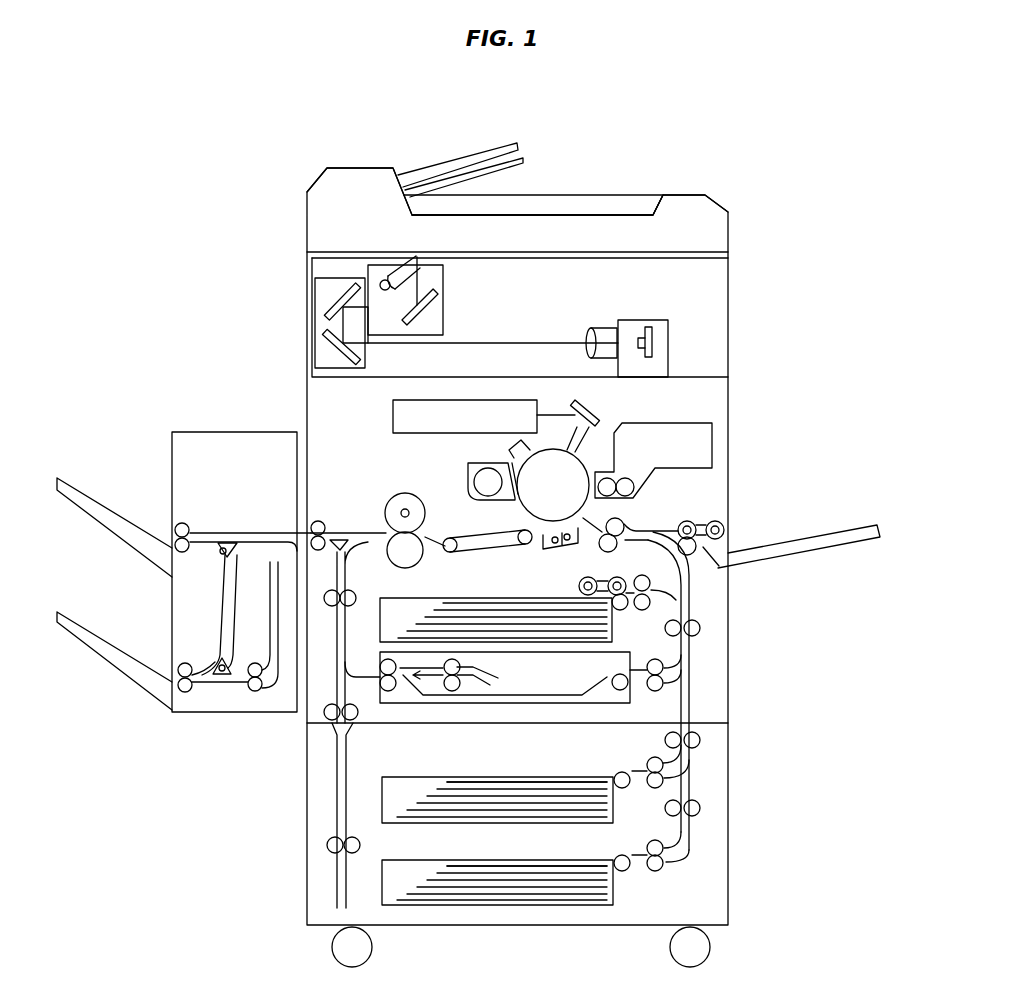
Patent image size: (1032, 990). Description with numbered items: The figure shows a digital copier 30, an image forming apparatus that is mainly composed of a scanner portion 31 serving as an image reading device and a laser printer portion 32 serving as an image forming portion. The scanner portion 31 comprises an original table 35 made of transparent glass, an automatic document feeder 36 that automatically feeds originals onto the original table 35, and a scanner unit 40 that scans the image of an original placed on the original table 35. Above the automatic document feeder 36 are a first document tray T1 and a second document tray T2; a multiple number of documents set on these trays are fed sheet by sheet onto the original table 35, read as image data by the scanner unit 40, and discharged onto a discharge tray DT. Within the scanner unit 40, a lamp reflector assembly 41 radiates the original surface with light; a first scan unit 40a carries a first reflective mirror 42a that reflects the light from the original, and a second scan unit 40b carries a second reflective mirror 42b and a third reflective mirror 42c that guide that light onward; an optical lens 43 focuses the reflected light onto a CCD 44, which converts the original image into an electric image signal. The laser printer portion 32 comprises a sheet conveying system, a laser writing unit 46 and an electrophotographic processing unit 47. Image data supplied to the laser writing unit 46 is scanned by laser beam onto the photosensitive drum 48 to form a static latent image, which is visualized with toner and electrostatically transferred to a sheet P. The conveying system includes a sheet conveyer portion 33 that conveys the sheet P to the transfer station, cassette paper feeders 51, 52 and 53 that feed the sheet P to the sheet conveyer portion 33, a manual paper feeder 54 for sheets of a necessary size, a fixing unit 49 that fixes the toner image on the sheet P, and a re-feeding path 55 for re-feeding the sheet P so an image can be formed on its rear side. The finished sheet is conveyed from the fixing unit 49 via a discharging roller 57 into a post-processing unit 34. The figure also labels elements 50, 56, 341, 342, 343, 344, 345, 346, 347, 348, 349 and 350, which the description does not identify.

The digital copier 30 is at (804, 302).
The scanner portion 31 is at (728, 289).
The laser printer portion 32 is at (728, 449).
The sheet conveyer portion 33 is at (651, 524).
The post-processing unit 34 is at (184, 569).
The original table 35 is at (548, 252).
The automatic document feeder (ADF) 36 is at (603, 222).
The discharge tray DT is at (650, 195).
The first document tray T1 is at (463, 153).
The second document tray T2 is at (521, 152).
The scanner unit 40 is at (418, 314).
The first scan unit 40a is at (450, 325).
The second scan unit 40b is at (367, 361).
The lamp reflector assembly 41 is at (412, 282).
The first reflective mirror 42a is at (437, 300).
The second reflective mirror 42b is at (330, 308).
The third reflective mirror 42c is at (325, 340).
The optical lens 43 is at (590, 335).
The CCD 44 is at (640, 328).
The laser writing unit 46 is at (420, 433).
The electrophotographic processing unit 47 is at (705, 403).
The photosensitive drum 48 is at (593, 447).
The fixing unit 49 is at (426, 513).
The paper feed section 50 is at (707, 685).
The cassette paper feeder 51 is at (435, 598).
The cassette paper feeder 52 is at (487, 777).
The cassette paper feeder 53 is at (487, 860).
The manual paper feeder 54 is at (806, 537).
The re-feeding path 55 is at (433, 707).
The duplex conveying path 56 is at (349, 578).
The discharging roller 57 is at (321, 521).
The sheet P is at (570, 782).
The first discharge tray 341 is at (80, 488).
The second discharge tray 342 is at (118, 672).
The conveying path 343 is at (282, 528).
The conveying path 344 is at (202, 532).
The conveying path 345 is at (222, 600).
The switching gate 346 is at (232, 543).
The switching gate 347 is at (221, 678).
The conveying roller pair 348 is at (278, 673).
The discharge roller pair 349 is at (178, 525).
The discharge roller pair 350 is at (182, 666).